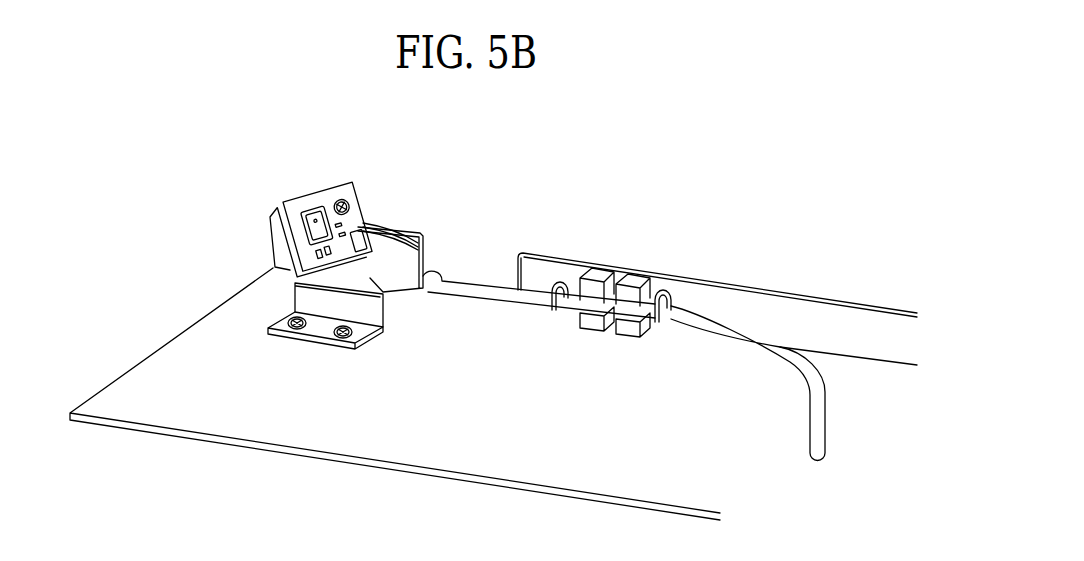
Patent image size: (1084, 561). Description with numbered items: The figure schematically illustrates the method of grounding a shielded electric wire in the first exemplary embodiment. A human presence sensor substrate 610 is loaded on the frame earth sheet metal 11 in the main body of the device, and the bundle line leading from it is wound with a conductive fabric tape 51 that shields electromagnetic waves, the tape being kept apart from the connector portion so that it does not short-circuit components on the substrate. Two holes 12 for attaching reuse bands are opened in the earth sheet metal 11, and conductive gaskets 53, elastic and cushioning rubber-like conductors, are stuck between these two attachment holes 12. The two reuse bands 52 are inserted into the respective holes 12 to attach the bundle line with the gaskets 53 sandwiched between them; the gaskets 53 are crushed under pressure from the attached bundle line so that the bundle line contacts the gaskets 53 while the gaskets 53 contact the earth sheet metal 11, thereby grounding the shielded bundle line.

The frame earth sheet metal 11 is at (216, 328).
The attachment hole 12 is at (670, 292).
The conductive fabric tape 51 is at (483, 292).
The reuse band 52 is at (562, 281).
The conductive gasket 53 is at (602, 267).
The human presence sensor substrate 610 is at (314, 205).